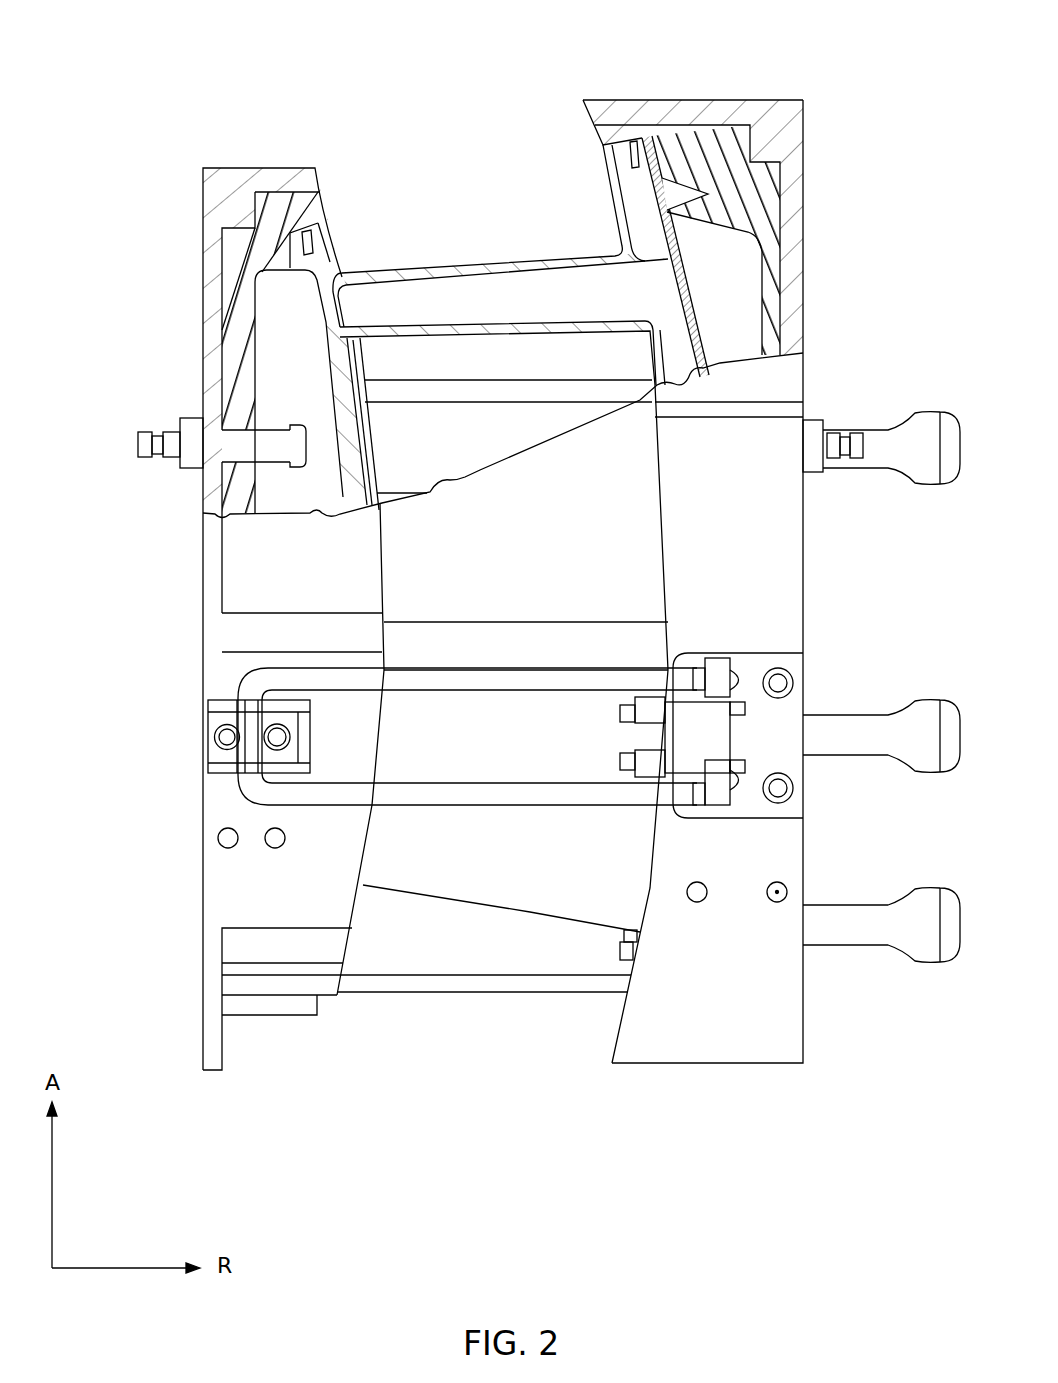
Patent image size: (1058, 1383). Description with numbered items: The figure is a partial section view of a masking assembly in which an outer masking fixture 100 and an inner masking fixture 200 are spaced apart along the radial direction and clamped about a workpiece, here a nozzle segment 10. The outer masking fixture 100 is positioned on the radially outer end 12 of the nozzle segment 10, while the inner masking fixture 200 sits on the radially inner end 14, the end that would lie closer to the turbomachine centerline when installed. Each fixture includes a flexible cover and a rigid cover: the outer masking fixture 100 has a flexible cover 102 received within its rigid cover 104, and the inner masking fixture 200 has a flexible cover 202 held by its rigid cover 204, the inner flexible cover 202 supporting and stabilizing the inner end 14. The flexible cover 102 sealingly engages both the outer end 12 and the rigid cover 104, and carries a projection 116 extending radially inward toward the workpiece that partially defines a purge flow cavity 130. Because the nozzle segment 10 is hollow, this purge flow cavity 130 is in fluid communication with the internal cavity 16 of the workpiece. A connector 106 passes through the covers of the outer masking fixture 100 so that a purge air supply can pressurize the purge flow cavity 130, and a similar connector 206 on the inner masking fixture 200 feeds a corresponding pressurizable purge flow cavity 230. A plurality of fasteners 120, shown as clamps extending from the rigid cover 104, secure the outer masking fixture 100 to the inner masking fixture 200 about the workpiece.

The nozzle segment 10 is at (450, 170).
The radially outer end 12 is at (643, 203).
The radially inner end 14 is at (320, 268).
The internal cavity 16 is at (521, 313).
The outer masking fixture 100 is at (830, 70).
The flexible cover 102 is at (752, 200).
The rigid cover 104 is at (677, 117).
The connector 106 is at (848, 450).
The projection 116 is at (773, 190).
The fasteners 120 is at (888, 447).
The purge flow cavity 130 is at (738, 294).
The inner masking fixture 200 is at (153, 126).
The flexible cover 202 is at (250, 307).
The rigid cover 204 is at (277, 185).
The connector 206 is at (157, 440).
The purge flow cavity 230 is at (314, 477).